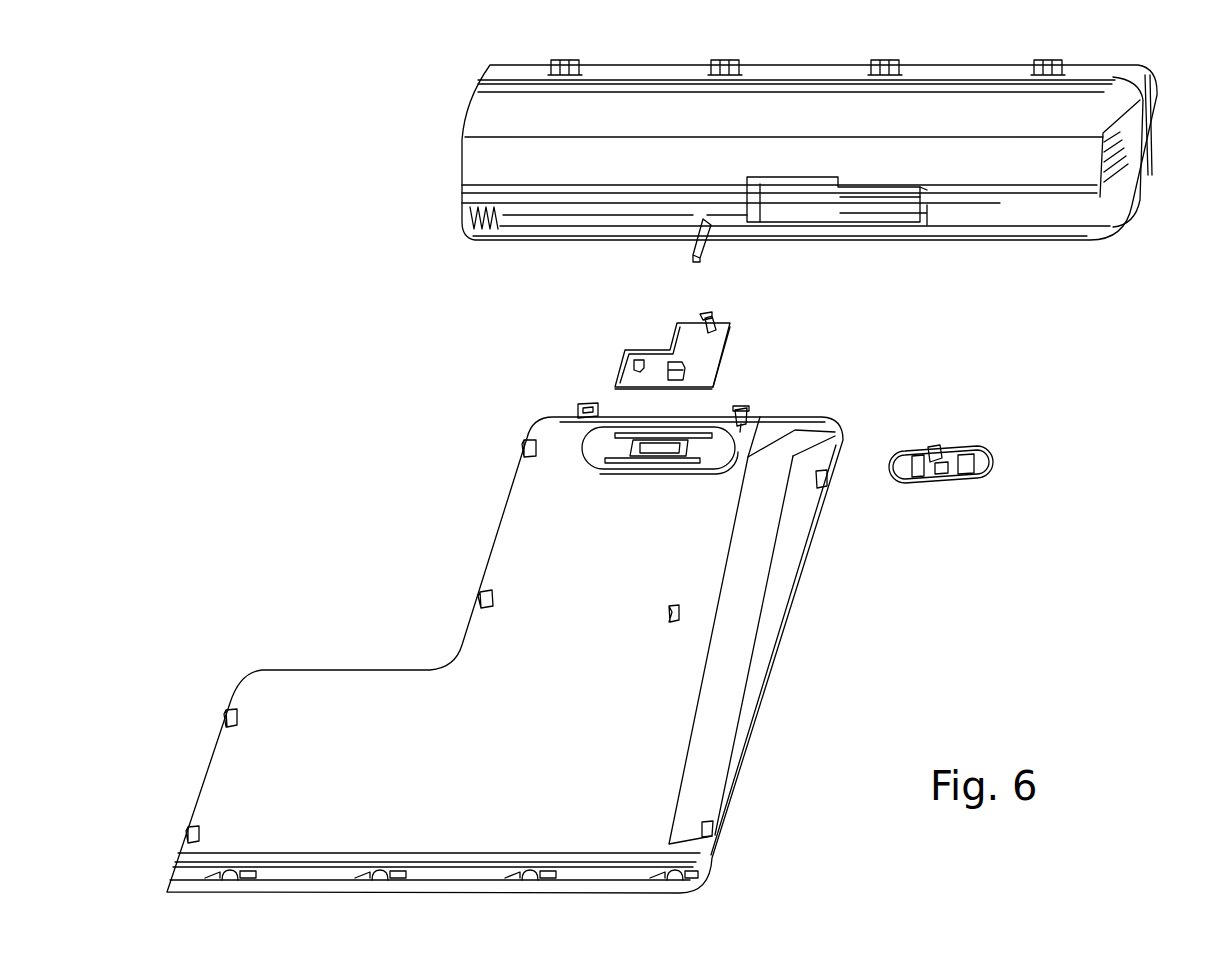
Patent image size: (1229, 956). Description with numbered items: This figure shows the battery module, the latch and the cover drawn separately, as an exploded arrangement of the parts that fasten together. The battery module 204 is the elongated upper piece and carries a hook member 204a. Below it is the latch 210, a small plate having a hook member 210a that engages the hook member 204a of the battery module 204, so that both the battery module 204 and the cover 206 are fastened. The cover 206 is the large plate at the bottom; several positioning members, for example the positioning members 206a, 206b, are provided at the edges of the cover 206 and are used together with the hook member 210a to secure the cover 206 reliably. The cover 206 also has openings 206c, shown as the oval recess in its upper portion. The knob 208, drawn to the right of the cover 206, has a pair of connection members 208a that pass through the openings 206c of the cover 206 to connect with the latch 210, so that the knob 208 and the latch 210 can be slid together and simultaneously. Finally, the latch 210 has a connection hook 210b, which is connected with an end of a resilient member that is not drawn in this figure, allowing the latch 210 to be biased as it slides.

The battery module 204 is at (1112, 140).
The hook member 204a is at (703, 245).
The cover 206 is at (693, 675).
The positioning member 206a is at (577, 404).
The positioning member 206b is at (226, 716).
The openings 206c is at (653, 450).
The knob 208 is at (993, 463).
The connection members 208a is at (937, 445).
The latch 210 is at (727, 353).
The hook member 210a is at (708, 325).
The connection hook 210b is at (630, 357).